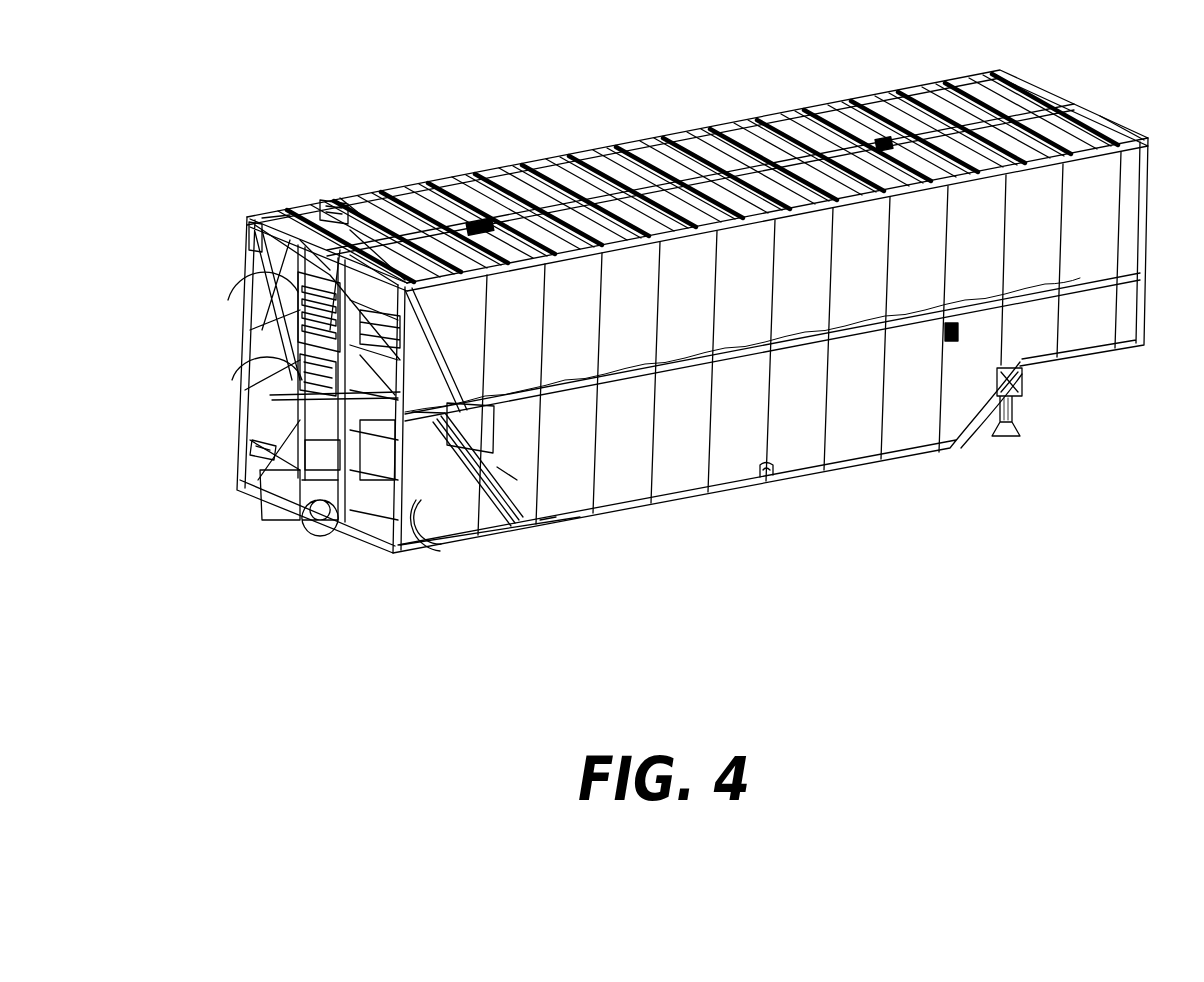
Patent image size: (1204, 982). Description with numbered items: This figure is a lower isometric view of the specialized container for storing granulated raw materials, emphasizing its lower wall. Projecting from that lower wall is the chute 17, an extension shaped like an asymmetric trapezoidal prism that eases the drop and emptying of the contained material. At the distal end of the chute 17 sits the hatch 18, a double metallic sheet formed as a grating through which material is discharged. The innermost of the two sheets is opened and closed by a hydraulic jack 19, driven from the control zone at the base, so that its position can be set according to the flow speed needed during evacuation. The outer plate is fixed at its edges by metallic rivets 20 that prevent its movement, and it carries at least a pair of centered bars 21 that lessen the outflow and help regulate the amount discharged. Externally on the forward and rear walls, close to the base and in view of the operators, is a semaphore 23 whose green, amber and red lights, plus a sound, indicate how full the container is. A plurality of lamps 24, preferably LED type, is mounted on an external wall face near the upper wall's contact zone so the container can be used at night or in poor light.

The chute 17 is at (336, 212).
The hatch 18 is at (292, 345).
The hydraulic jack 19 is at (258, 454).
The metallic rivets 20 is at (296, 280).
The centered bars 21 is at (322, 496).
The semaphore 23 is at (458, 222).
The lamps 24 is at (958, 332).